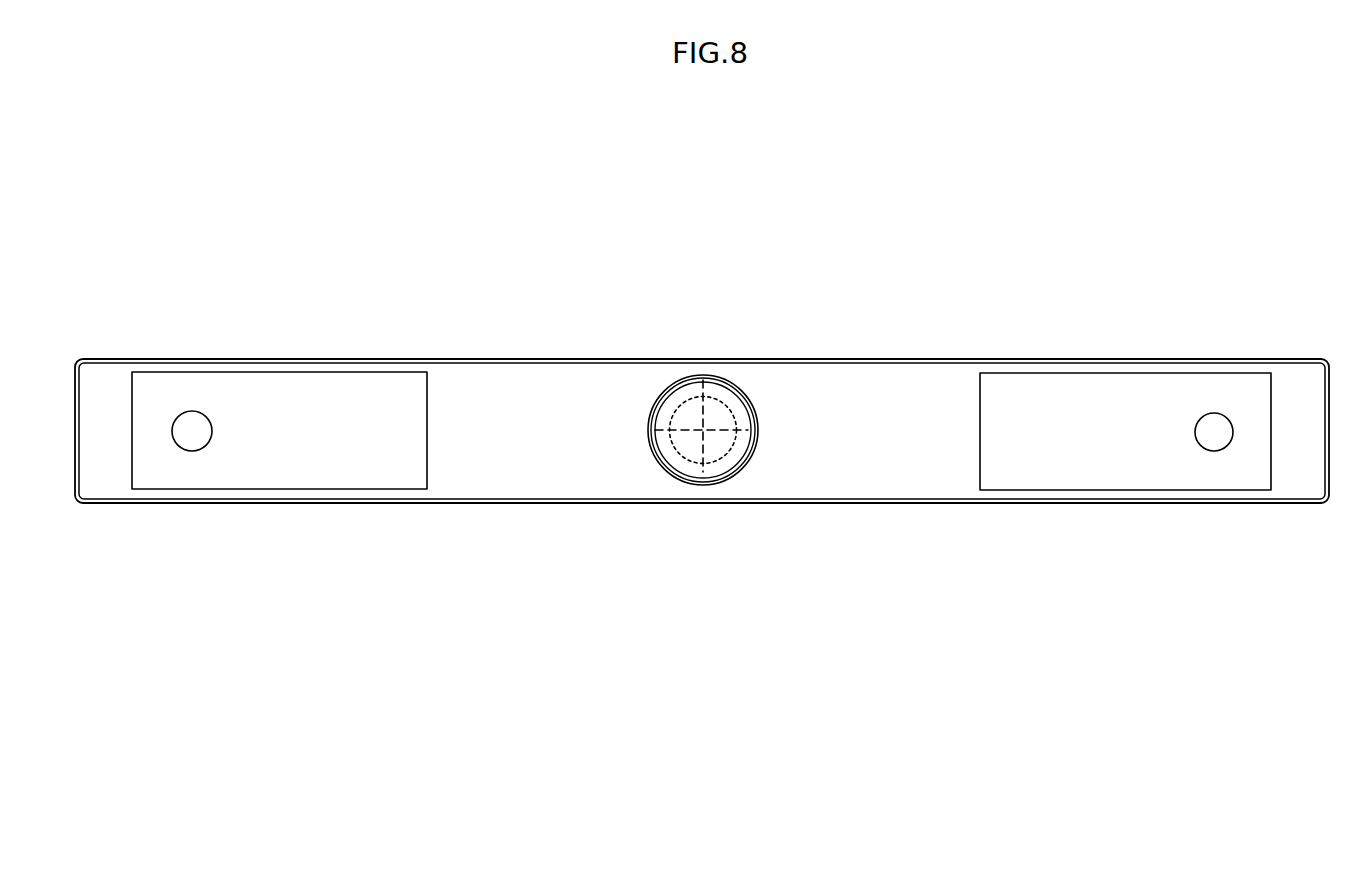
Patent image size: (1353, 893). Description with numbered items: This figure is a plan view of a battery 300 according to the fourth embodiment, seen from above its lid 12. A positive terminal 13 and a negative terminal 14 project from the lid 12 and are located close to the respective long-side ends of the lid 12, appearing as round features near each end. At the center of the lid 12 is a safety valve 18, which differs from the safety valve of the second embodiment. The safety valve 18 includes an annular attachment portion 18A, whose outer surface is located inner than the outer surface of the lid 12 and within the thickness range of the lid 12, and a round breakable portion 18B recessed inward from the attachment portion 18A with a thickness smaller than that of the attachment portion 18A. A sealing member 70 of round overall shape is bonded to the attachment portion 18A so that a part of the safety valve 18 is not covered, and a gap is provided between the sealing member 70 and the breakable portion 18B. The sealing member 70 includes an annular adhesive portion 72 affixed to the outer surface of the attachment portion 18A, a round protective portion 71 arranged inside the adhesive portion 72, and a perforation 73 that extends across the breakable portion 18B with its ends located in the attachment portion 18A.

The battery 300 is at (713, 278).
The lid 12 is at (890, 402).
The positive terminal 13 is at (1217, 402).
The negative terminal 14 is at (193, 395).
The safety valve 18 is at (738, 383).
The attachment portion 18A is at (752, 453).
The breakable portion 18B is at (737, 465).
The sealing member 70 is at (753, 410).
The protective portion 71 is at (688, 413).
The adhesive portion 72 is at (717, 468).
The perforation 73 is at (660, 465).